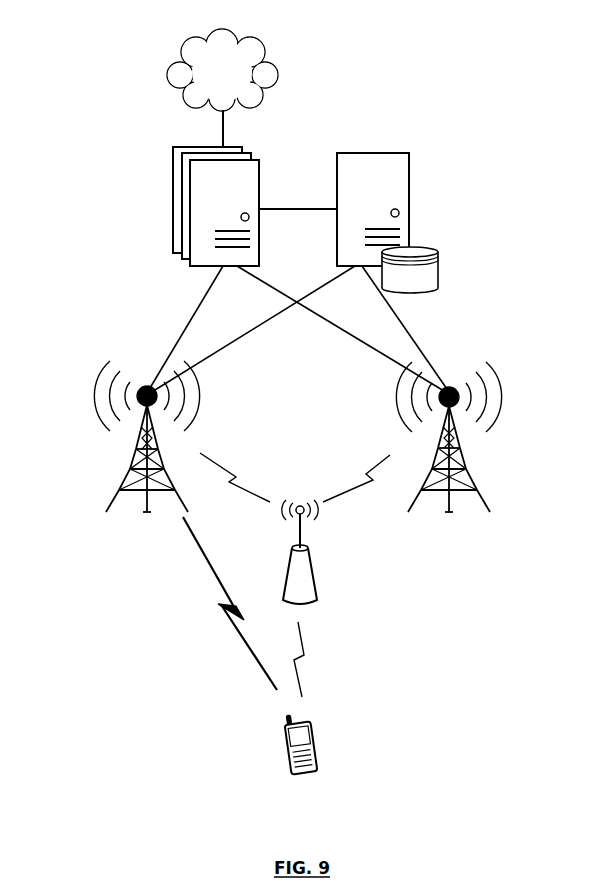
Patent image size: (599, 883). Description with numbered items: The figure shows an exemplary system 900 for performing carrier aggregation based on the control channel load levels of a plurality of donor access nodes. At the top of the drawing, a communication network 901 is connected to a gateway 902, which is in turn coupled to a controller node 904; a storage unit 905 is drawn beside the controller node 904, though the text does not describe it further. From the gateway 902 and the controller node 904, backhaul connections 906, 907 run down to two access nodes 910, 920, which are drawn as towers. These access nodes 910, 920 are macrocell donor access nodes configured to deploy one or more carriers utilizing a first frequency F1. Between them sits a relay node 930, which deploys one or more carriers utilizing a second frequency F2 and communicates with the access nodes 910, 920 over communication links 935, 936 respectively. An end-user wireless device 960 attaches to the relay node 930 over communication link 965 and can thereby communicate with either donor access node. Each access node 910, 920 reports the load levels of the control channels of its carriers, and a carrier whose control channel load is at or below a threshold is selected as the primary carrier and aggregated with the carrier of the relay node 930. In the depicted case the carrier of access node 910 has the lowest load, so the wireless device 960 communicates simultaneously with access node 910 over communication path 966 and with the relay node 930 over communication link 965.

The system 900 is at (352, 51).
The communication network 901 is at (204, 85).
The gateway 902 is at (173, 182).
The controller node 904 is at (410, 195).
The database 905 is at (438, 268).
The backhaul link 906 is at (280, 293).
The backhaul link 907 is at (248, 332).
The access node 910 is at (113, 480).
The access node 920 is at (470, 477).
The relay node 930 is at (317, 585).
The communication link 935 is at (223, 463).
The communication link 936 is at (375, 463).
The end-user wireless device 960 is at (315, 733).
The communication link 965 is at (303, 643).
The communication path 966 is at (220, 610).